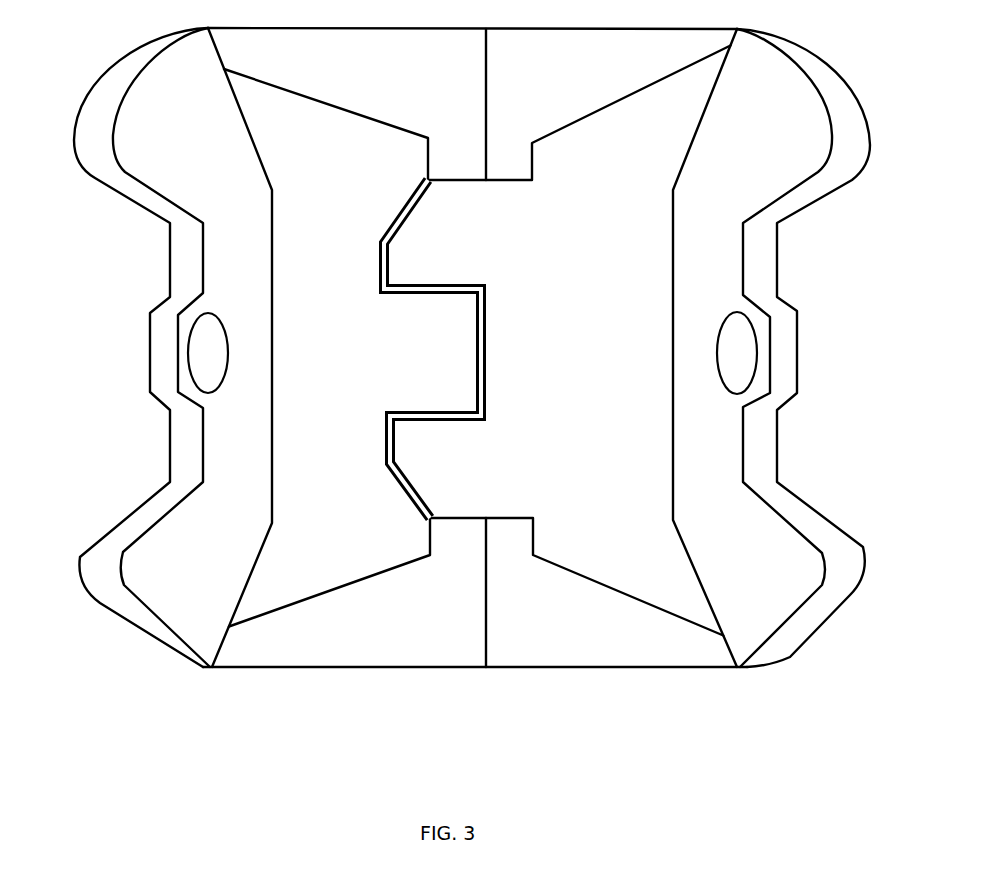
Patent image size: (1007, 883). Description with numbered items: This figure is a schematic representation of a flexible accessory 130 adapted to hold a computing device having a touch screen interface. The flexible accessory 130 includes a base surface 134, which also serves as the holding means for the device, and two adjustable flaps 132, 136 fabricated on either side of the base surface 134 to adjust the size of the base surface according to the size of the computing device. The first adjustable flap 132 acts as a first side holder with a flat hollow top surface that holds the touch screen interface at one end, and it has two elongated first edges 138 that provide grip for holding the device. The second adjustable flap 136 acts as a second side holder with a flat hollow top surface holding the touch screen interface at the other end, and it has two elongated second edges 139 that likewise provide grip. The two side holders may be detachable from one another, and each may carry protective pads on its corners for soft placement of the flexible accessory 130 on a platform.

The flexible accessory 130 is at (295, 683).
The adjustable flap 132 is at (757, 240).
The base surface 134 is at (340, 403).
The adjustable flap 136 is at (203, 70).
The elongated first edges 138 is at (813, 137).
The elongated second edges 139 is at (148, 140).